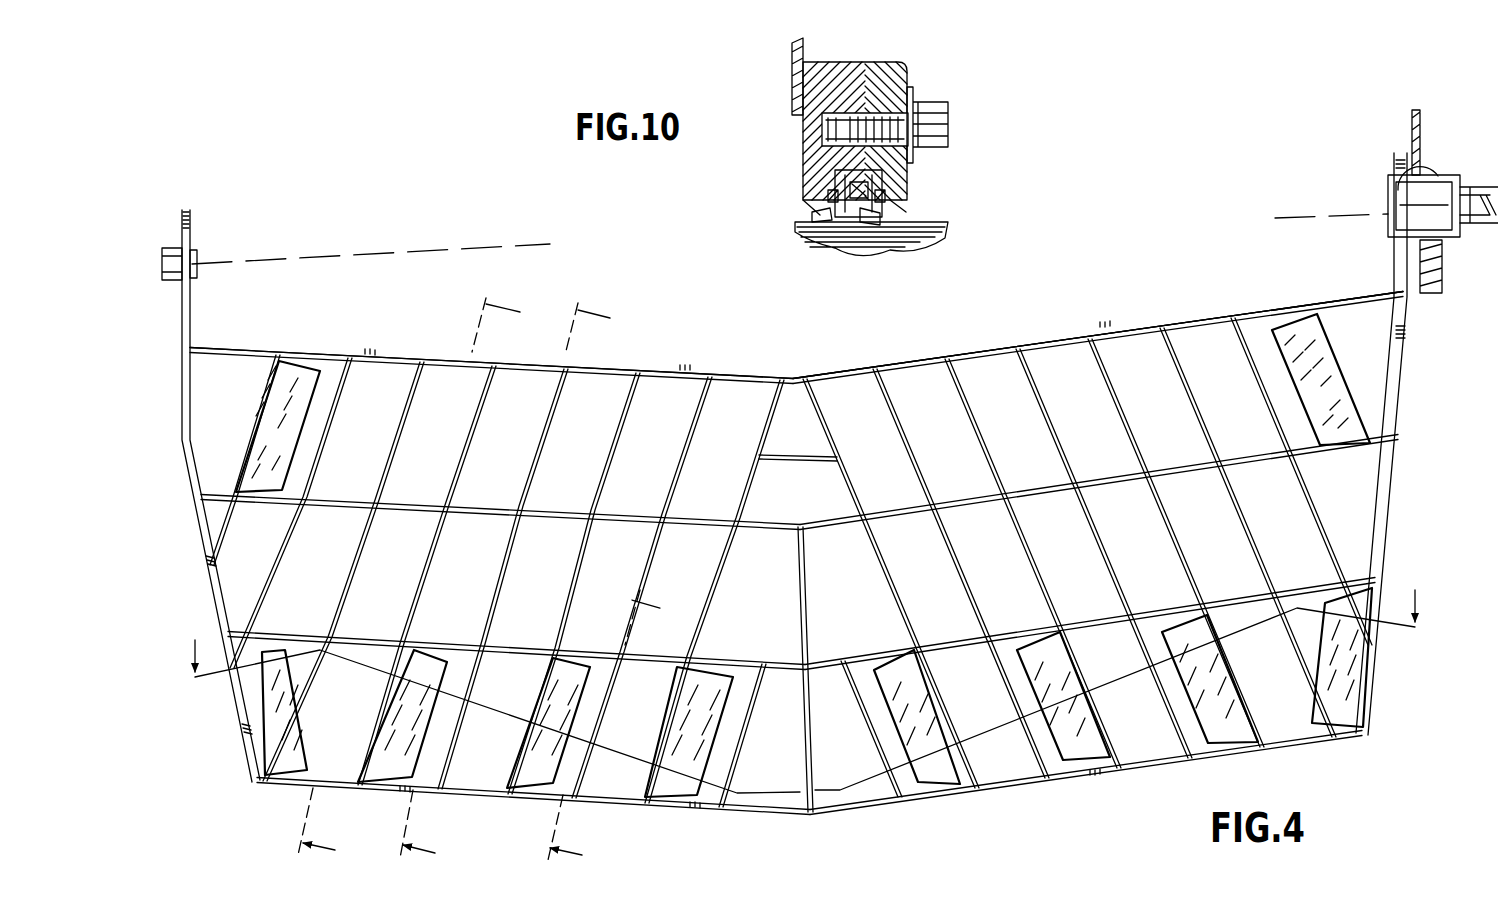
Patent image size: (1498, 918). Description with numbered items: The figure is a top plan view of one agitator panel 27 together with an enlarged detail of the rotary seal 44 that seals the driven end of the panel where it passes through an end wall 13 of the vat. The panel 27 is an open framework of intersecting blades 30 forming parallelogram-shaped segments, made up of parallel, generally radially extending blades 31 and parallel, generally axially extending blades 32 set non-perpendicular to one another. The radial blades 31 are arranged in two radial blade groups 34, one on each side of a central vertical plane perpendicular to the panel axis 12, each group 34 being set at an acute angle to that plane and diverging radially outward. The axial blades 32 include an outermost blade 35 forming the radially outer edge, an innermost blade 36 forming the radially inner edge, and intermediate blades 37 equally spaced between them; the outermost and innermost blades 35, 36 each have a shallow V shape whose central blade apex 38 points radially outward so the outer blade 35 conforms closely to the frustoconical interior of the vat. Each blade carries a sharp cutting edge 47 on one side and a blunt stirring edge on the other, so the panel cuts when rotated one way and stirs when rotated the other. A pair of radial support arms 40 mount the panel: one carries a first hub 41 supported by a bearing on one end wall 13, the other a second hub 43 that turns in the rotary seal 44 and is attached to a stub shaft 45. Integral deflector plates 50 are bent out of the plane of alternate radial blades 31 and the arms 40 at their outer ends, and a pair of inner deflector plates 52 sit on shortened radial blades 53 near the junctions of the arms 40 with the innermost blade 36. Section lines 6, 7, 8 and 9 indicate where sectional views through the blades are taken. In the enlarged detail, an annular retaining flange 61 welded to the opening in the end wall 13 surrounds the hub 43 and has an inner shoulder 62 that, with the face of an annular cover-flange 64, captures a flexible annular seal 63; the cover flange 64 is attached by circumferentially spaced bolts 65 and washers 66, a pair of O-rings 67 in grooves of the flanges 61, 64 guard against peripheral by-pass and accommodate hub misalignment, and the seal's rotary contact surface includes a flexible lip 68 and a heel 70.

In FIG. 4, the axis 12 is at (330, 258).
In FIG. 4, the end wall 13 is at (1418, 113).
In FIG. 10, the end wall 13 is at (794, 72).
In FIG. 4, the agitator panel 27 is at (957, 350).
In FIG. 4, the intersecting blades 30 is at (480, 530).
In FIG. 4, the radially extending blades 31 is at (622, 415).
In FIG. 4, the axially extending blades 32 is at (1098, 335).
In FIG. 4, the radial blade groups 34 is at (707, 407).
In FIG. 4, the outermost blade 35 is at (1022, 788).
In FIG. 4, the innermost blade 36 is at (1185, 330).
In FIG. 4, the intermediate axially extending blades 37 is at (1048, 492).
In FIG. 4, the central blade apex 38 is at (793, 393).
In FIG. 4, the radial support arms 40 is at (213, 568).
In FIG. 4, the first hub 41 is at (170, 253).
In FIG. 4, the second hub 43 is at (1415, 208).
In FIG. 10, the second hub 43 is at (860, 256).
In FIG. 4, the rotary seal 44 is at (1443, 292).
In FIG. 10, the rotary seal 44 is at (790, 190).
In FIG. 4, the stub shaft 45 is at (1467, 203).
In FIG. 4, the cutting edge 47 is at (406, 355).
In FIG. 4, the deflector plates 50 is at (1346, 713).
In FIG. 4, the inner deflector plates 52 is at (300, 373).
In FIG. 4, the shortened radial blades 53 is at (268, 432).
In FIG. 10, the annular retaining flange 61 is at (862, 70).
In FIG. 10, the inner shoulder 62 is at (845, 178).
In FIG. 10, the flexible annular seal 63 is at (838, 196).
In FIG. 10, the annular cover-flange 64 is at (905, 78).
In FIG. 10, the bolts 65 is at (945, 122).
In FIG. 10, the washers 66 is at (915, 160).
In FIG. 10, the O-rings 67 is at (828, 205).
In FIG. 10, the flexible lip 68 is at (815, 240).
In FIG. 10, the heel 70 is at (880, 225).
In FIG. 4, the section line 6- 6 is at (396, 571).
In FIG. 4, the section line 7- 7 is at (490, 575).
In FIG. 4, the section line 8- 8 is at (590, 725).
In FIG. 4, the section line 9- 9 is at (804, 691).